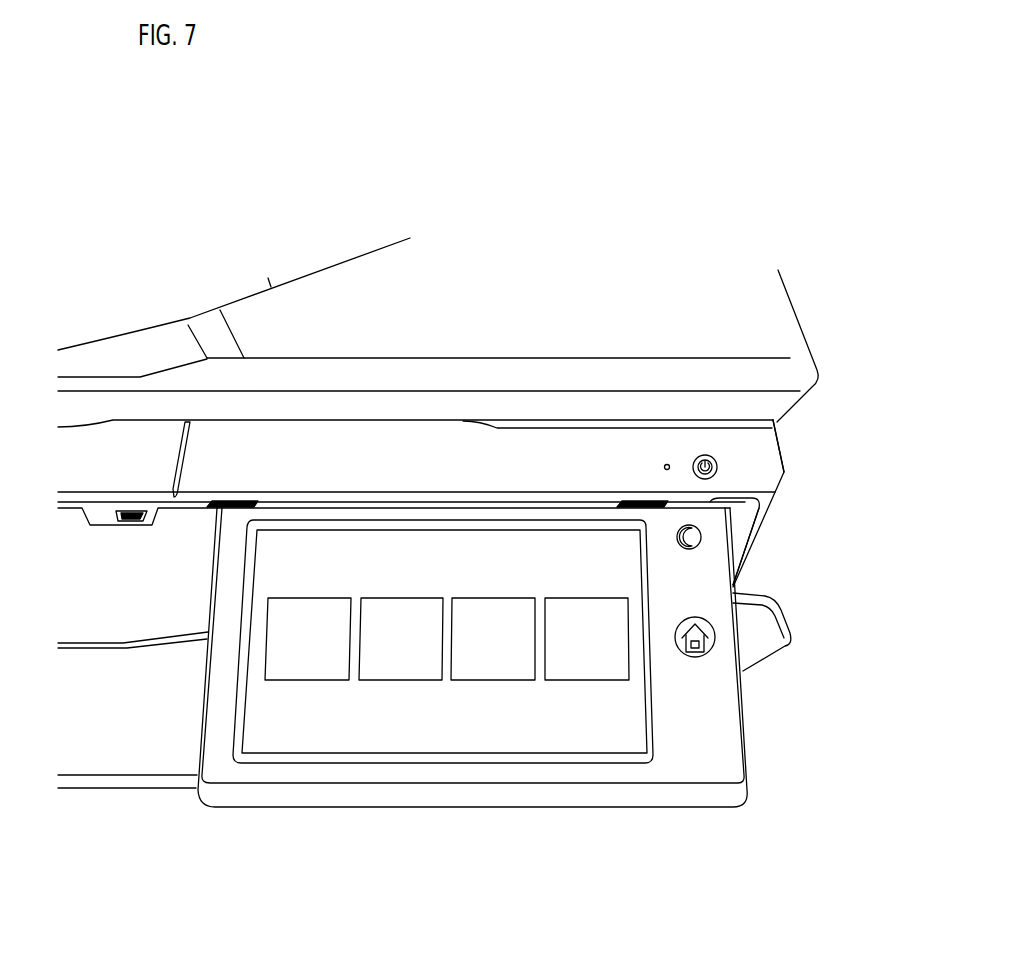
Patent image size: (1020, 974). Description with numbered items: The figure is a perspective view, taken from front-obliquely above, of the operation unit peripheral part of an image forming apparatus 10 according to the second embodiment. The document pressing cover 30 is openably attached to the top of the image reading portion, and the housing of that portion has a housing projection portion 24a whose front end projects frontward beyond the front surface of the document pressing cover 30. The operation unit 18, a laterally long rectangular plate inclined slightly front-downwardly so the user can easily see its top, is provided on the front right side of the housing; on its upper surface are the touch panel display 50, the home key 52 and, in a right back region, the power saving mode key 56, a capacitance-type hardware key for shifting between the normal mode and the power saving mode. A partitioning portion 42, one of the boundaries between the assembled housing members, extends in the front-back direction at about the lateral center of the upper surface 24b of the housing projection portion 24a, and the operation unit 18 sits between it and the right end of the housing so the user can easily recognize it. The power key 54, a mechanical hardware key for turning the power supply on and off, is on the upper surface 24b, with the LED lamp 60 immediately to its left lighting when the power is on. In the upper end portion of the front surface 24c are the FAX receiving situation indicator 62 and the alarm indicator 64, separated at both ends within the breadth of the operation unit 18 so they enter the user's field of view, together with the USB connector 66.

The image forming apparatus 10 is at (214, 167).
The operation unit 18 is at (695, 757).
The housing projection portion 24a is at (800, 454).
The upper surface of the housing projection portion 24b is at (760, 467).
The front surface of the housing projection portion 24c is at (752, 512).
The document pressing cover 30 is at (760, 327).
The partitioning portion 42 is at (178, 455).
The touch panel display 50 is at (357, 737).
The home key 52 is at (712, 646).
The power key 54 is at (714, 460).
The power saving mode key 56 is at (698, 540).
The LED lamp 60 is at (662, 468).
The FAX receiving situation indicator 62 is at (233, 500).
The alarm indicator 64 is at (644, 502).
The USB connector 66 is at (133, 521).